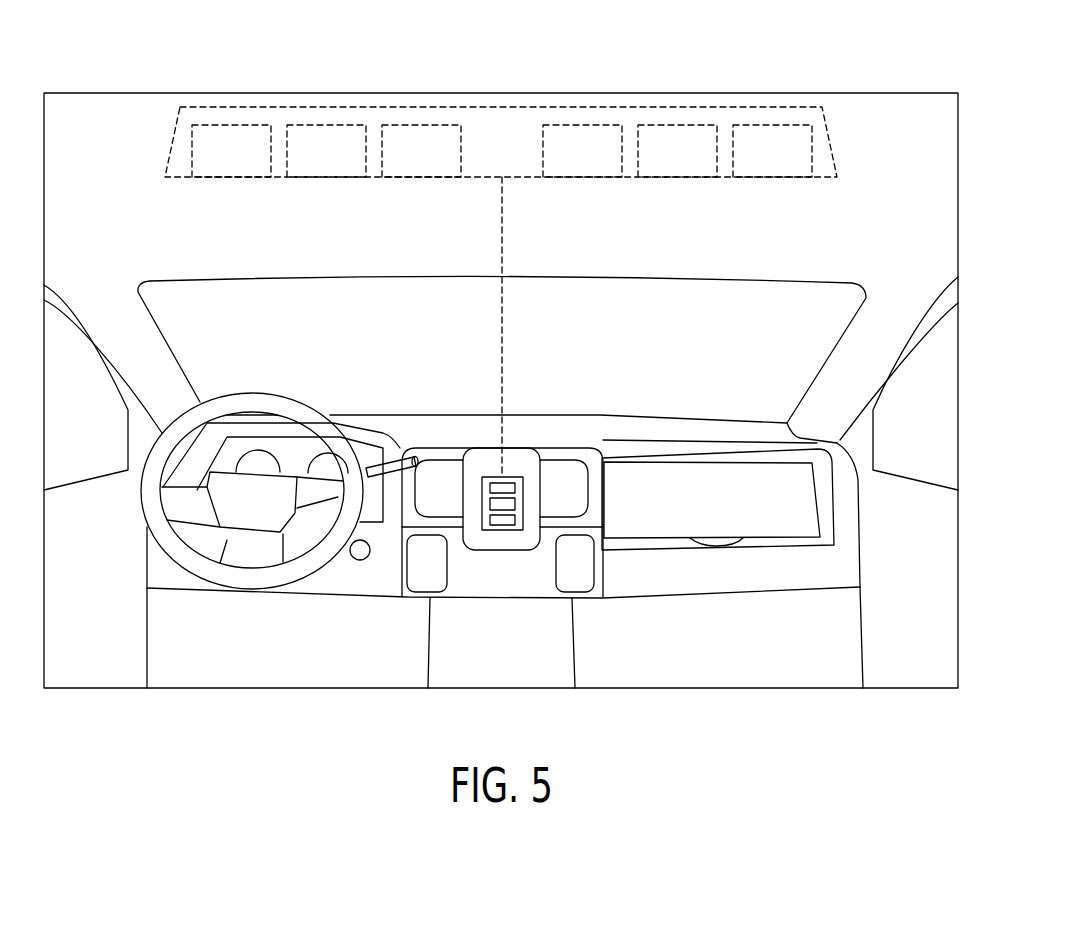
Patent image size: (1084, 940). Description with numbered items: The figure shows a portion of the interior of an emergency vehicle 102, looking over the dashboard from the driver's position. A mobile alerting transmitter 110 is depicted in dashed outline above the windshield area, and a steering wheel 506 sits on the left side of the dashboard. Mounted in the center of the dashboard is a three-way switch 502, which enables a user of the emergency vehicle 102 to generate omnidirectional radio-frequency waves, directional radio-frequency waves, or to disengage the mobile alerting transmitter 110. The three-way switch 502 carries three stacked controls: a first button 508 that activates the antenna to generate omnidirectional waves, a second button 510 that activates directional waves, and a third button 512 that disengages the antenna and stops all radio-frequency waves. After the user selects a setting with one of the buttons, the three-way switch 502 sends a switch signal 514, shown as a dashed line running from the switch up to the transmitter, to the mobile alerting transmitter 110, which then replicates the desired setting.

The emergency vehicle 102 is at (672, 40).
The mobile alerting transmitter 110 is at (832, 147).
The three-way switch 502 is at (525, 440).
The steering wheel 506 is at (263, 393).
The first button 508 is at (490, 487).
The second button 510 is at (516, 504).
The third button 512 is at (500, 524).
The switch signal 514 is at (503, 230).